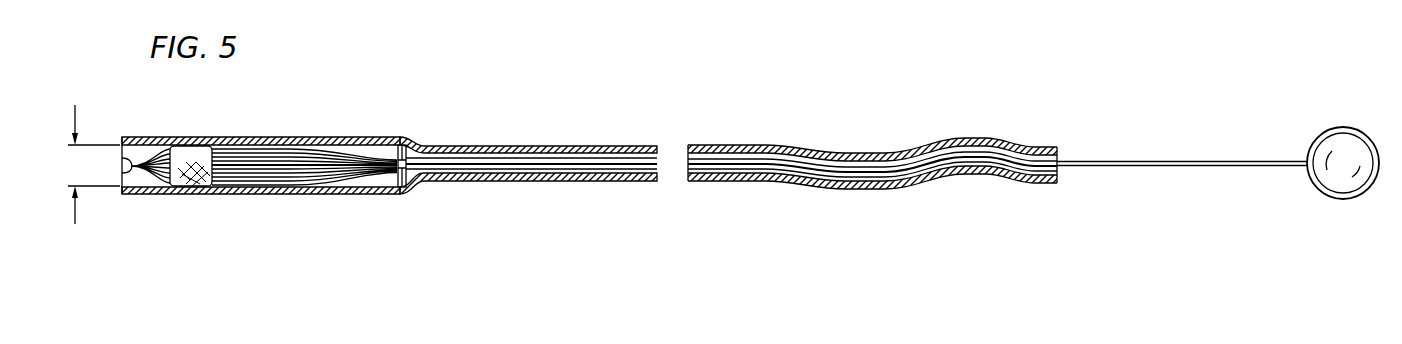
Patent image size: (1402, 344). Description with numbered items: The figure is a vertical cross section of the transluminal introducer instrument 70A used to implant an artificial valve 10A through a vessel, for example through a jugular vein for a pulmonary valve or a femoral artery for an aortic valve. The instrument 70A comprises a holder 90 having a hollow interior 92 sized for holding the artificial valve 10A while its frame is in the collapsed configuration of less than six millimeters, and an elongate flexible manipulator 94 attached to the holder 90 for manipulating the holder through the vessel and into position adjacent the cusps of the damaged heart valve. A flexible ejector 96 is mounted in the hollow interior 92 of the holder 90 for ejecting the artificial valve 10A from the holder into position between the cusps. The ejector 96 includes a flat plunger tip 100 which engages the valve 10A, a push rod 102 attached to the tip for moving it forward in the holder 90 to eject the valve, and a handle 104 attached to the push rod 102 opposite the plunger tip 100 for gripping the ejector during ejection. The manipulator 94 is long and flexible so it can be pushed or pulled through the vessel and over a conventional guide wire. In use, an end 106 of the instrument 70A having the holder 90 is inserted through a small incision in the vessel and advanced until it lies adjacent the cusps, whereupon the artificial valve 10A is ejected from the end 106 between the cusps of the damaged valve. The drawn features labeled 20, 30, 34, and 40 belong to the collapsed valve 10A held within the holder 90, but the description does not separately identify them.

The artificial valve 10A is at (278, 128).
The tubular housing 20 is at (301, 198).
The fiber bundle 30 is at (338, 150).
The plug / second end 34 is at (382, 196).
The absorbent pad 40 is at (184, 201).
The holder 90 is at (377, 142).
The hollow interior 92 is at (135, 190).
The elongate flexible manipulator 94 is at (806, 186).
The flexible ejector 96 is at (1133, 150).
The flat plunger tip 100 is at (414, 180).
The push rod 102 is at (768, 174).
The handle 104 is at (1356, 128).
The end 106 is at (122, 195).
The instrument 70A is at (848, 102).